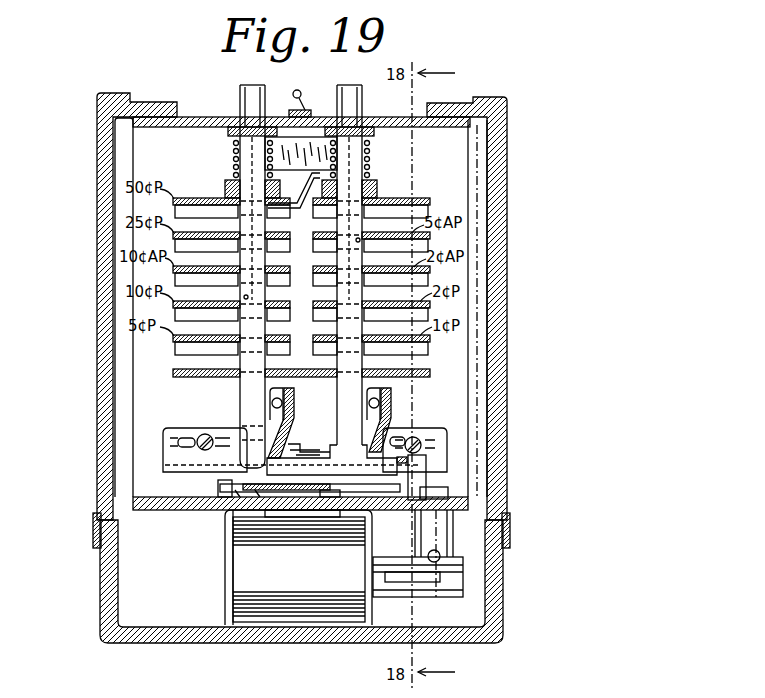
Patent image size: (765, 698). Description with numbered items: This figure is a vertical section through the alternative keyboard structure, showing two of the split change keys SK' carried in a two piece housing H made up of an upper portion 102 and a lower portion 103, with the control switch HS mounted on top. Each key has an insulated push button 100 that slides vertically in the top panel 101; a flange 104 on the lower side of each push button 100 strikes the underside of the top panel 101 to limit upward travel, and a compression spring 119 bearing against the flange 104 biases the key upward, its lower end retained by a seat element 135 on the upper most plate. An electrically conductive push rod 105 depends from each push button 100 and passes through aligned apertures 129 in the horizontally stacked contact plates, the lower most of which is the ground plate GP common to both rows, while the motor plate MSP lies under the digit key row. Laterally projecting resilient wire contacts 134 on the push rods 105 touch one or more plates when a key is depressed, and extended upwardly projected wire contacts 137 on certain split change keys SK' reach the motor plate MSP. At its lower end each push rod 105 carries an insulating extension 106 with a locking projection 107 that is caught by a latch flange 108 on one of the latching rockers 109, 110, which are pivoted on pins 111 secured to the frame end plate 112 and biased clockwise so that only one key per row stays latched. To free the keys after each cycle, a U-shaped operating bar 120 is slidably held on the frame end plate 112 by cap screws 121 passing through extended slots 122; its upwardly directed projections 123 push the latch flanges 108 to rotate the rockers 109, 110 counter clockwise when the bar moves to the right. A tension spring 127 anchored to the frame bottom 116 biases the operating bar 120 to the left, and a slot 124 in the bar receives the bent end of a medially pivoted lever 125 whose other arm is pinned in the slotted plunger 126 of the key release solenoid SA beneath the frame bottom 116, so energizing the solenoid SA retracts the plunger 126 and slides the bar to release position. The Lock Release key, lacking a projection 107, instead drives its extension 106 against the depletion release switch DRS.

The push button 100 is at (258, 85).
The top panel 101 is at (186, 128).
The upper portion 102 is at (97, 178).
The lower portion 103 is at (102, 572).
The flange 104 is at (231, 134).
The push rod 105 is at (240, 393).
The extension 106 is at (247, 428).
The locking projection 107 is at (292, 417).
The latch flange 108 is at (287, 444).
The latching rocker 109 is at (277, 382).
The latching rocker 110 is at (392, 393).
The pins 111 is at (280, 353).
The frame end plate 112 is at (143, 367).
The frame bottom 116 is at (197, 511).
The compression spring 119 is at (234, 163).
The operating bar 120 is at (165, 452).
The cap screws 121 is at (203, 436).
The extended slots 122 is at (183, 440).
The projections 123 is at (343, 448).
The slot 124 is at (432, 465).
The lever 125 is at (432, 479).
The plunger 126 is at (405, 586).
The tension spring 127 is at (296, 500).
The apertures 129 is at (238, 305).
The wire contacts 134 is at (247, 218).
The bushing 135 is at (226, 190).
The wire contacts 137 is at (305, 207).
The split change keys SK' is at (293, 84).
The control switch HS is at (303, 99).
The motor plate MSP is at (452, 185).
The ground plate GP is at (176, 374).
The housing H is at (159, 581).
The key release solenoid SA is at (288, 600).
The depletion release switch DRS is at (358, 500).